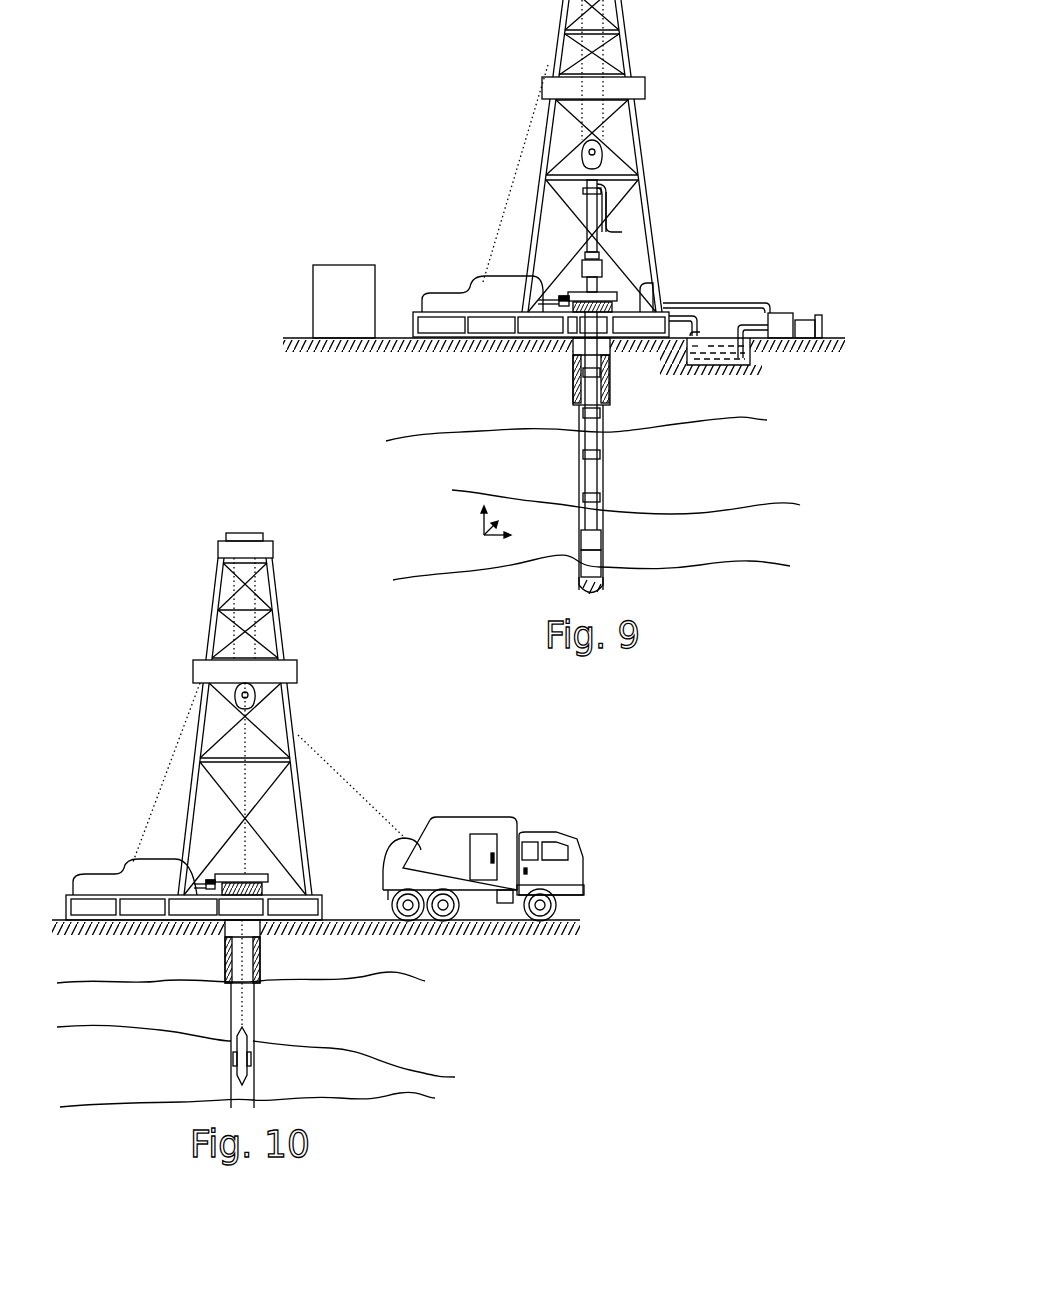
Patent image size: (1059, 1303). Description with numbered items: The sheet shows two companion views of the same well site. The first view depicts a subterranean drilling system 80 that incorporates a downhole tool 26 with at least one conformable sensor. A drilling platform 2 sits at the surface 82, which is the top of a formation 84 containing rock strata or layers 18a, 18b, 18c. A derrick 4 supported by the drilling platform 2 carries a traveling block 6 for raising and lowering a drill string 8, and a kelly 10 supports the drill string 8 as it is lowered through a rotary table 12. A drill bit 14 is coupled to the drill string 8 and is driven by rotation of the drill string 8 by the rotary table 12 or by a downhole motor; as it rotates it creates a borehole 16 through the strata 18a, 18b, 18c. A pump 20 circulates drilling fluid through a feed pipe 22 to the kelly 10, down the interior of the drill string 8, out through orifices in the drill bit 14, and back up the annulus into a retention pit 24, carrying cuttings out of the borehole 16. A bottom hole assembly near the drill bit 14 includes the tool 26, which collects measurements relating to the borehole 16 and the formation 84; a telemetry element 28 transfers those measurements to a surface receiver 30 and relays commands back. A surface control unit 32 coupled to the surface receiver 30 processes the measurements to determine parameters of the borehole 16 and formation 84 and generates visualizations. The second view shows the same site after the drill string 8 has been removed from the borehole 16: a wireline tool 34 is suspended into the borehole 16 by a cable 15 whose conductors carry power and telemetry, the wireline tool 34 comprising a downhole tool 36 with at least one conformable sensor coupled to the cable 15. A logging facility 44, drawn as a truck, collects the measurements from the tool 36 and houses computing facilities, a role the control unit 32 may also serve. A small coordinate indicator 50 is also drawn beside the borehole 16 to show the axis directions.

In FIG. 9, the drilling platform 2 is at (413, 320).
In FIG. 10, the drilling platform 2 is at (322, 910).
In FIG. 9, the derrick 4 is at (633, 50).
In FIG. 10, the derrick 4 is at (307, 812).
In FIG. 9, the traveling block 6 is at (600, 152).
In FIG. 10, the traveling block 6 is at (252, 693).
In FIG. 9, the drill string 8 is at (594, 425).
In FIG. 9, the kelly 10 is at (600, 195).
In FIG. 9, the rotary table 12 is at (612, 298).
In FIG. 10, the rotary table 12 is at (255, 876).
In FIG. 9, the drill bit 14 is at (603, 590).
In FIG. 10, the cable 15 is at (240, 960).
In FIG. 9, the borehole 16 is at (606, 442).
In FIG. 10, the borehole 16 is at (248, 1003).
In FIG. 10, the rock stratum 18a is at (412, 967).
In FIG. 9, the rock stratum 18b is at (576, 443).
In FIG. 10, the rock stratum 18b is at (92, 1014).
In FIG. 9, the rock stratum 18c is at (752, 416).
In FIG. 10, the rock stratum 18c is at (90, 1091).
In FIG. 9, the pump 20 is at (782, 313).
In FIG. 9, the feed pipe 22 is at (715, 304).
In FIG. 9, the retention pit 24 is at (728, 358).
In FIG. 9, the downhole tool 26 is at (583, 560).
In FIG. 9, the telemetry element 28 is at (595, 541).
In FIG. 9, the surface receiver 30 is at (600, 265).
In FIG. 9, the surface control unit 32 is at (357, 308).
In FIG. 10, the wireline tool 34 is at (237, 1043).
In FIG. 10, the downhole tool 36 is at (233, 1060).
In FIG. 10, the logging facility 44 is at (462, 817).
In FIG. 9, the coordinate system 50 is at (478, 531).
In FIG. 9, the drilling system 80 is at (722, 98).
In FIG. 9, the surface 82 is at (298, 338).
In FIG. 10, the surface 82 is at (57, 920).
In FIG. 9, the formation 84 is at (342, 407).
In FIG. 10, the formation 84 is at (544, 996).